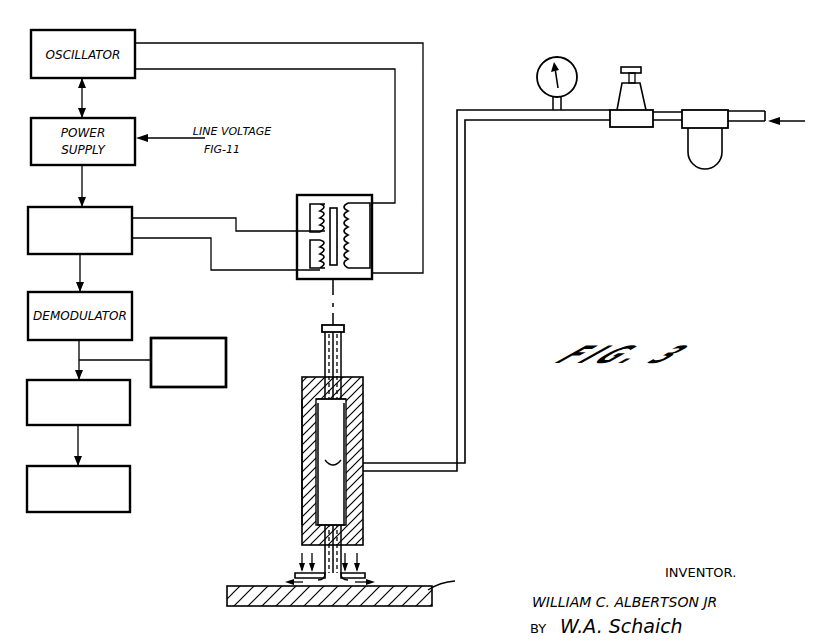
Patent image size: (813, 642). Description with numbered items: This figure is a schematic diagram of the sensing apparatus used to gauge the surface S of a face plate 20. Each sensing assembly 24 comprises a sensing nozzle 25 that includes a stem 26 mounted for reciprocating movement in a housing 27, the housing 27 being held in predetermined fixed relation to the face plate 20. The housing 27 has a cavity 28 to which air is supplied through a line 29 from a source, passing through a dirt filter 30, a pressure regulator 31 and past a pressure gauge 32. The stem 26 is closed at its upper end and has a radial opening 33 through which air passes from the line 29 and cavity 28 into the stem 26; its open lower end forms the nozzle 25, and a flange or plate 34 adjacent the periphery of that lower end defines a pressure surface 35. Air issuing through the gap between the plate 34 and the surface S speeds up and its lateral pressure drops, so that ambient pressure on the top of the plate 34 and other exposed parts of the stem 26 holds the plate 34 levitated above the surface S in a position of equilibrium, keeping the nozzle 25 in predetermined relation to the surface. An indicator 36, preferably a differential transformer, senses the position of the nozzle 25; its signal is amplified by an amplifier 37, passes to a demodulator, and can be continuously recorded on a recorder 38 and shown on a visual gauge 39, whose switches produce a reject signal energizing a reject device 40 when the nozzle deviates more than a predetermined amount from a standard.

The face plate 20 is at (255, 609).
The sensing assembly 24 is at (292, 448).
The sensing nozzle 25 is at (296, 548).
The stem 26 is at (323, 487).
The housing 27 is at (312, 421).
The cavity 28 is at (316, 405).
The line 29 is at (467, 251).
The dirt filter 30 is at (712, 119).
The pressure regulator 31 is at (632, 97).
The pressure gauge 32 is at (538, 68).
The radial opening 33 is at (330, 468).
The flange or plate 34 is at (362, 575).
The pressure surface 35 is at (300, 573).
The indicator 36 is at (342, 180).
The amplifier 37 is at (146, 206).
The recorder 38 is at (196, 338).
The visual gauge 39 is at (136, 412).
The reject device 40 is at (136, 501).